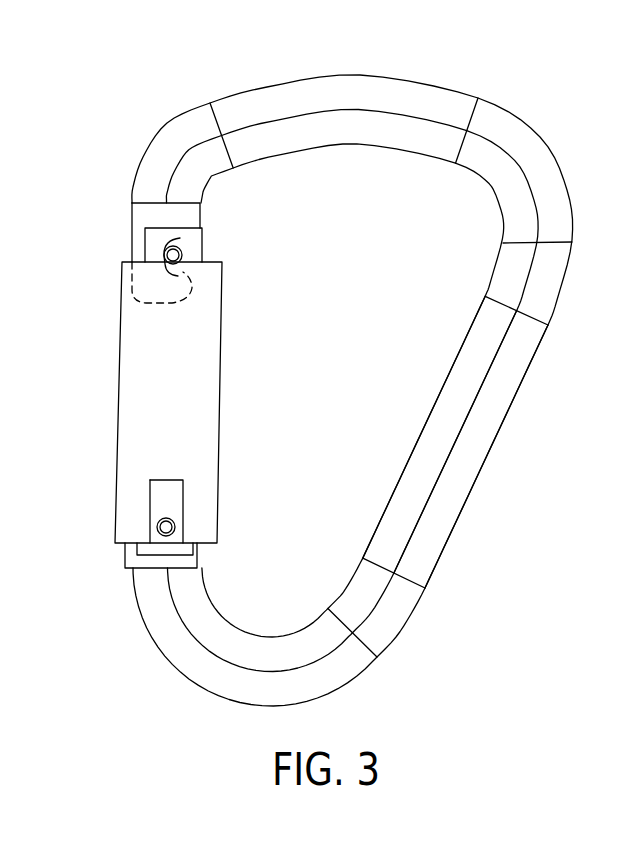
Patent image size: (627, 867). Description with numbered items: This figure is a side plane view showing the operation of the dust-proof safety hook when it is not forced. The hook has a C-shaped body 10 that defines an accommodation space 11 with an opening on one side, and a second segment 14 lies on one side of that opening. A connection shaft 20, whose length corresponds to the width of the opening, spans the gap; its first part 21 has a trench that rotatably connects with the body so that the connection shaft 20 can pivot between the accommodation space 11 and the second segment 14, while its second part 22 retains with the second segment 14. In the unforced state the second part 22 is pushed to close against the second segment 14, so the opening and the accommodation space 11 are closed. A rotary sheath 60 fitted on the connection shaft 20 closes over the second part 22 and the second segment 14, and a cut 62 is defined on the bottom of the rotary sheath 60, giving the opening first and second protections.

The body 10 is at (367, 390).
The accommodation space 11 is at (360, 398).
The second segment 14 is at (178, 283).
The connection shaft 20 is at (155, 499).
The first part 21 is at (160, 550).
The second part 22 is at (193, 245).
The rotary sheath 60 is at (120, 365).
The cut 62 is at (183, 498).